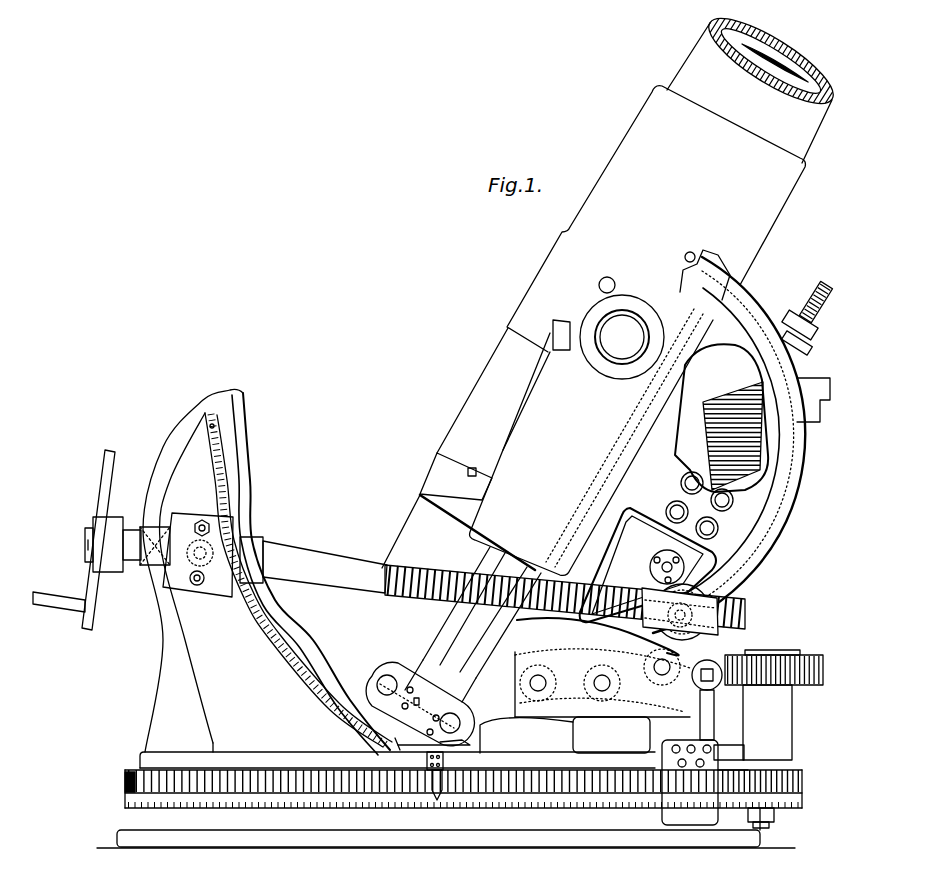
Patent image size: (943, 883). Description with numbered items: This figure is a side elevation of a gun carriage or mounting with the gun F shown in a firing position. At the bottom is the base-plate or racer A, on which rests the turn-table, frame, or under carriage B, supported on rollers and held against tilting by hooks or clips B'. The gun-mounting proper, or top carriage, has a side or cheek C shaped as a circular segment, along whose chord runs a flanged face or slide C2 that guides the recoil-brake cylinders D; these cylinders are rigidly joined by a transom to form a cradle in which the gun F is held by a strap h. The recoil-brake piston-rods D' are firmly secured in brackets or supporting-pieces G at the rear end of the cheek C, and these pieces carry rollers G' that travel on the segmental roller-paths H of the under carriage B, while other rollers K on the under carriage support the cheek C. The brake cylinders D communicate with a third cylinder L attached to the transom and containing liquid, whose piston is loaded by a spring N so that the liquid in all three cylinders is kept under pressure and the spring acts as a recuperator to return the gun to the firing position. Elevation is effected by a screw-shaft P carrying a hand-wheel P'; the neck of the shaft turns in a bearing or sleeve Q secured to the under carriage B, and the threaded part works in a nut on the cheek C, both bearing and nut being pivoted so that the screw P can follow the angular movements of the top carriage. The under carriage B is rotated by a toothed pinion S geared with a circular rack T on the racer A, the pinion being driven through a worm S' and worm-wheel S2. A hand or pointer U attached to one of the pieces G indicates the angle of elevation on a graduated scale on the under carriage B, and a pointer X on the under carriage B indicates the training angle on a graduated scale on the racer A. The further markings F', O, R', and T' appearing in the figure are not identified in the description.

The base-plate or racer A is at (446, 828).
The turn-table, frame, or under carriage B is at (397, 578).
The hooks or clips B' is at (705, 782).
The side or cheek of the top carriage C is at (674, 487).
The flanged face or slide C2 is at (705, 298).
The recoil-brake cylinders D is at (619, 449).
The recoil-brake piston-rods D' is at (473, 624).
The gun F is at (675, 178).
The eyepiece tube F' is at (466, 448).
The brackets or supporting-pieces G is at (432, 719).
The rollers G' is at (423, 703).
The segmental roller-paths H is at (311, 574).
The rollers K is at (600, 675).
The third cylinder L is at (667, 561).
The spring N is at (760, 440).
The graduated scale O is at (298, 580).
The screw-shaft P is at (504, 585).
The hand-wheel P' is at (87, 540).
The bearing or sleeve Q is at (201, 555).
The worm wheel housing R' is at (680, 612).
The toothed pinion S is at (771, 797).
The worm S' is at (707, 691).
The worm-wheel S2 is at (768, 698).
The circular rack T is at (463, 789).
The rack end T' is at (117, 782).
The hand or pointer U is at (420, 762).
The hand or pointer X is at (444, 783).
The strap h is at (477, 511).